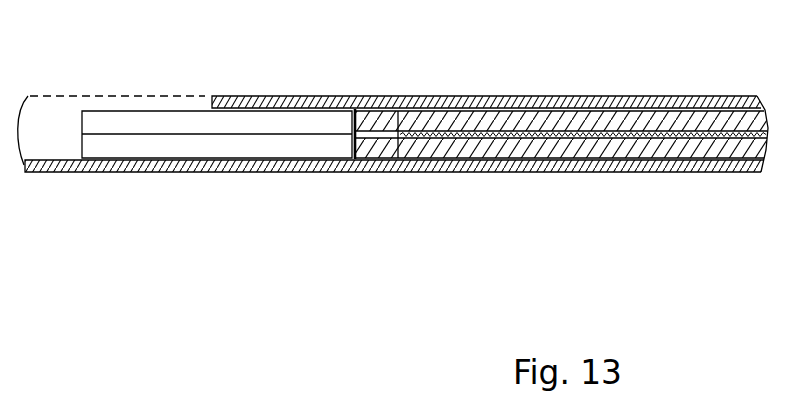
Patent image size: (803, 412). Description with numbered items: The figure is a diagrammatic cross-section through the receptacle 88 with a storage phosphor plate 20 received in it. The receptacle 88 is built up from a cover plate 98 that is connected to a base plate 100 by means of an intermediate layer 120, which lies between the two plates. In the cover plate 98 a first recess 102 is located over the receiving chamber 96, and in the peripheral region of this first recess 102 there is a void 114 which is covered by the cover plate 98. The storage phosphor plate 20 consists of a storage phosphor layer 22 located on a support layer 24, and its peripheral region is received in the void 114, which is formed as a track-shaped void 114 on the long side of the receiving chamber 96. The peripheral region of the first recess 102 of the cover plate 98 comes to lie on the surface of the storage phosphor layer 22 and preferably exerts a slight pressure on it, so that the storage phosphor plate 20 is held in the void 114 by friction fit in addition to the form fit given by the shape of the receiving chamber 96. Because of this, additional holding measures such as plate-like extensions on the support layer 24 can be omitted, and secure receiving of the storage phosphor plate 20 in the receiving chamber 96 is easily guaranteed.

The storage phosphor plate 20 is at (199, 135).
The storage phosphor layer 22 is at (123, 120).
The support layer 24 is at (124, 148).
The receptacle 88 is at (562, 168).
The receiving chamber 96 is at (48, 148).
The cover plate 98 is at (666, 100).
The base plate 100 is at (648, 172).
The first recess 102 is at (186, 90).
The void 114 is at (255, 163).
The intermediate layer 120 is at (520, 120).